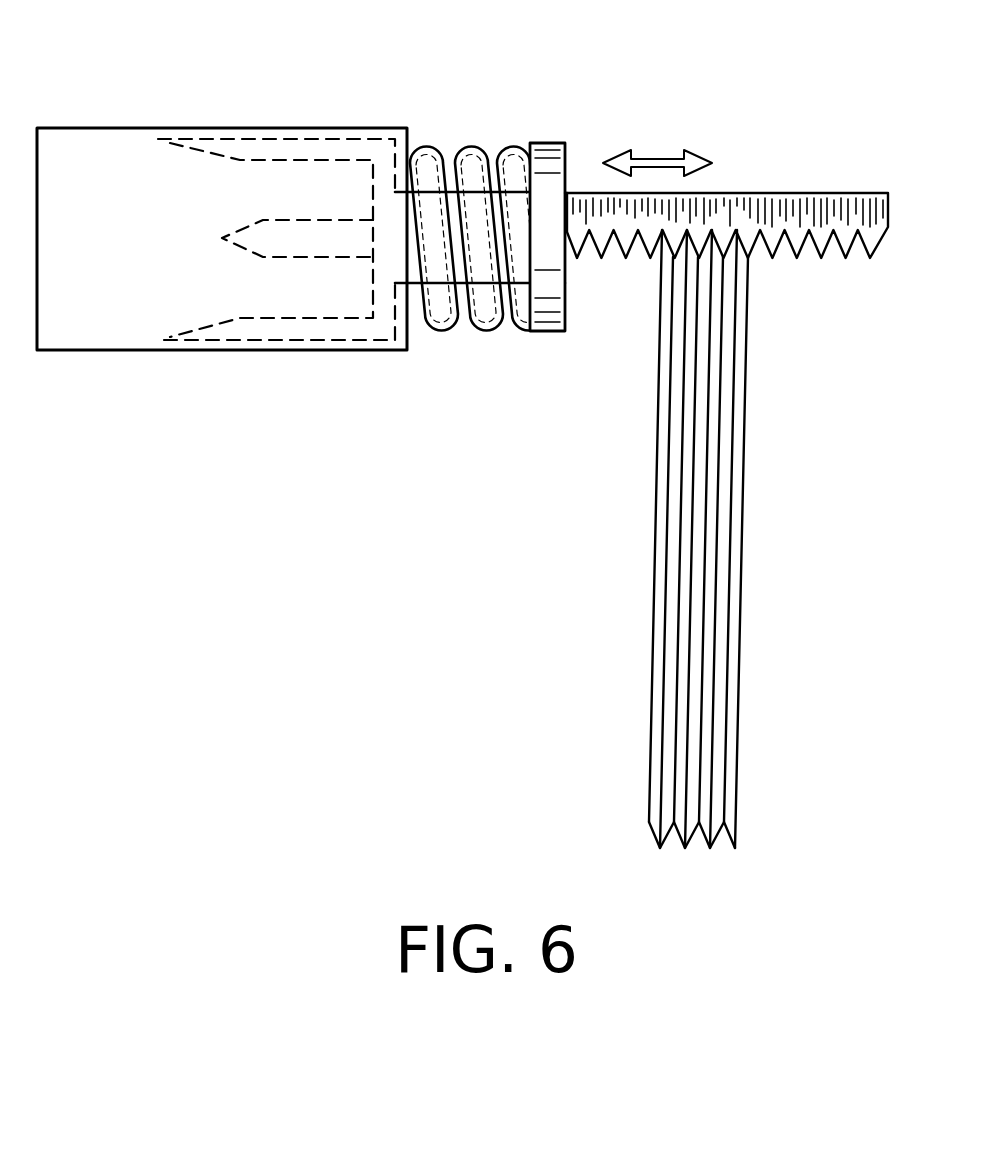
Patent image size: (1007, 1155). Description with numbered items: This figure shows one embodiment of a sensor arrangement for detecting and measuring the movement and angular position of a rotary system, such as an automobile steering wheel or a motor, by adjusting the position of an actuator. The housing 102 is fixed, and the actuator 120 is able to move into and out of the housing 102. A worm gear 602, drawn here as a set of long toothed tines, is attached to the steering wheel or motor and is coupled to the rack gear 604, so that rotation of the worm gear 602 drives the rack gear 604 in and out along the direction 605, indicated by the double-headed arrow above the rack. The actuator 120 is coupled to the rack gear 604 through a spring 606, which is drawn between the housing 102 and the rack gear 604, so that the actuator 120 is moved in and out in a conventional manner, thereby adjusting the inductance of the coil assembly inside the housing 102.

The housing 102 is at (122, 130).
The actuator 120 is at (314, 333).
The spring 606 is at (475, 163).
The rack gear 604 is at (803, 203).
The direction 605 is at (660, 158).
The worm gear 602 is at (618, 653).